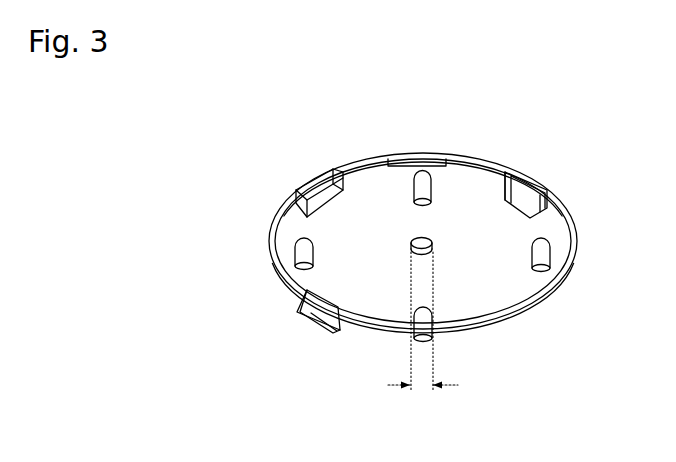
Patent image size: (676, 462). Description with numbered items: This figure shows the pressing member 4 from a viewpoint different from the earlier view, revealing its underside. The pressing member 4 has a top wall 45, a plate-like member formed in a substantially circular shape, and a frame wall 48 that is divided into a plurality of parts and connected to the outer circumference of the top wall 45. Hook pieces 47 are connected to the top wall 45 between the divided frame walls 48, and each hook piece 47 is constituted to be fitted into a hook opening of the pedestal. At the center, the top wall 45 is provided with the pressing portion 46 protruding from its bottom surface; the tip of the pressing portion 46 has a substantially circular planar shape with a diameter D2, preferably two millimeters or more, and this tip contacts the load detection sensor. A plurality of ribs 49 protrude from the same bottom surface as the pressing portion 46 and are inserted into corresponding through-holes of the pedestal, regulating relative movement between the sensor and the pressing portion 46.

The pressing member 4 is at (214, 133).
The top wall 45 is at (383, 206).
The pressing portion 46 is at (430, 240).
The hook pieces 47 is at (315, 188).
The frame wall 48 is at (274, 263).
The ribs 49 is at (422, 186).
The diameter of the plane at the tip of the pressing portion D2 is at (420, 388).